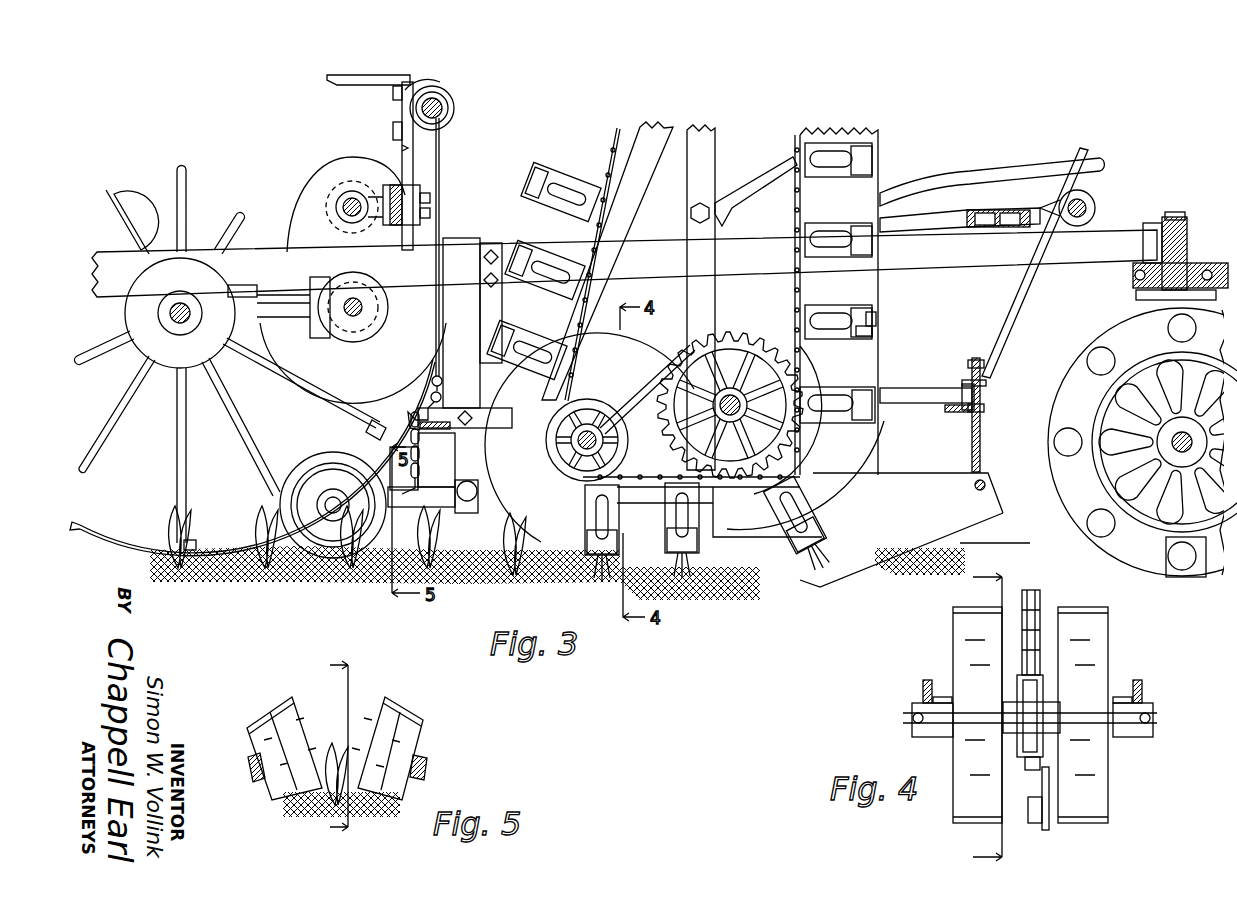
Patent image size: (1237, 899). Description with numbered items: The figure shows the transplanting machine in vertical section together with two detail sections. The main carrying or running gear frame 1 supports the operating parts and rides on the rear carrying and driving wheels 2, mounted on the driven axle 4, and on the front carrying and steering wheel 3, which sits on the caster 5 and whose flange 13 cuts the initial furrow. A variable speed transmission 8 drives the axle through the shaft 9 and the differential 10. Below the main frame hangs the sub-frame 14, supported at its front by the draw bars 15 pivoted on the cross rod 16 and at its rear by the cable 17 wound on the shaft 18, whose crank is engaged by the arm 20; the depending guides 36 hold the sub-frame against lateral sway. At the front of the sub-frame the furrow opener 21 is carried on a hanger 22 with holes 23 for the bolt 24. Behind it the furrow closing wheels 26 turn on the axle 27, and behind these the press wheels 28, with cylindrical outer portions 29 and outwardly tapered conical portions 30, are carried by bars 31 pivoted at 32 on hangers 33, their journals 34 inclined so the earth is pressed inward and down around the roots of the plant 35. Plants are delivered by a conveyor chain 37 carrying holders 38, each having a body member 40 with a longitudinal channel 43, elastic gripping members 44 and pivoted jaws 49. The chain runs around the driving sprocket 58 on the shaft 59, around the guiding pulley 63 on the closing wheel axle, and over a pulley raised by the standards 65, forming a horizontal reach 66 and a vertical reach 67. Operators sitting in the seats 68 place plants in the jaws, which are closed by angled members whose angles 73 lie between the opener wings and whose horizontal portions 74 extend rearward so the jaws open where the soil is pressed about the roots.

In FIG. 3, the main carrying or running gear frame 1 is at (1121, 232).
In FIG. 3, the rear carrying and driving wheels 2 is at (112, 543).
In FIG. 3, the front carrying and steering wheel 3 is at (1155, 530).
In FIG. 4, the front carrying and steering wheel 3 is at (979, 718).
In FIG. 5, the front carrying and steering wheel 3 is at (330, 748).
In FIG. 3, the driven axle 4 is at (183, 325).
In FIG. 3, the caster 5 is at (1148, 296).
In FIG. 3, the variable speed transmission 8 is at (342, 160).
In FIG. 3, the shaft 9 is at (280, 300).
In FIG. 3, the differential 10 is at (197, 270).
In FIG. 3, the flange 13 is at (1115, 545).
In FIG. 3, the sub-frame 14 is at (916, 394).
In FIG. 4, the sub-frame 14 is at (923, 692).
In FIG. 3, the draw bars 15 is at (1030, 290).
In FIG. 3, the cross rod 16 is at (1089, 205).
In FIG. 3, the cable 17 is at (472, 340).
In FIG. 3, the shaft 18 is at (446, 110).
In FIG. 3, the arm 20 is at (317, 455).
In FIG. 3, the furrow opener 21 is at (863, 565).
In FIG. 3, the hanger 22 is at (982, 440).
In FIG. 3, the holes 23 is at (986, 368).
In FIG. 3, the bolt 24 is at (986, 392).
In FIG. 3, the furrow closing wheels 26 is at (587, 437).
In FIG. 4, the furrow closing wheels 26 is at (970, 648).
In FIG. 3, the axle 27 is at (580, 457).
In FIG. 4, the axle 27 is at (1158, 718).
In FIG. 5, the press wheels 28 is at (247, 740).
In FIG. 5, the cylindrical outer portions 29 is at (258, 727).
In FIG. 5, the outwardly tapered conical portions 30 is at (283, 703).
In FIG. 3, the bars 31 is at (408, 507).
In FIG. 5, the bars 31 is at (250, 775).
In FIG. 3, the pivot 32 is at (467, 513).
In FIG. 3, the hangers 33 is at (462, 456).
In FIG. 3, the journals 34 is at (326, 498).
In FIG. 3, the roots of the plant 35 is at (263, 525).
In FIG. 5, the roots of the plant 35 is at (334, 755).
In FIG. 3, the depending guides 36 is at (497, 303).
In FIG. 3, the chain 37 is at (797, 203).
In FIG. 3, the holders 38 is at (840, 177).
In FIG. 4, the holders 38 is at (1048, 828).
In FIG. 4, the body members 40 is at (1041, 598).
In FIG. 3, the longitudinal channels 43 is at (836, 242).
In FIG. 3, the elastic gripping members 44 is at (872, 333).
In FIG. 4, the elastic gripping members 44 is at (1030, 818).
In FIG. 3, the pivoted jaws 49 is at (876, 320).
In FIG. 3, the driving sprocket 58 is at (733, 338).
In FIG. 3, the shaft 59 is at (745, 370).
In FIG. 3, the guiding pulley 63 is at (604, 410).
In FIG. 4, the guiding pulley 63 is at (1043, 692).
In FIG. 3, the standards 65 is at (713, 162).
In FIG. 3, the horizontal reach 66 is at (705, 490).
In FIG. 3, the vertical reach 67 is at (797, 245).
In FIG. 3, the seats 68 is at (1003, 175).
In FIG. 3, the angles 73 is at (866, 450).
In FIG. 3, the horizontal portions 74 is at (730, 520).